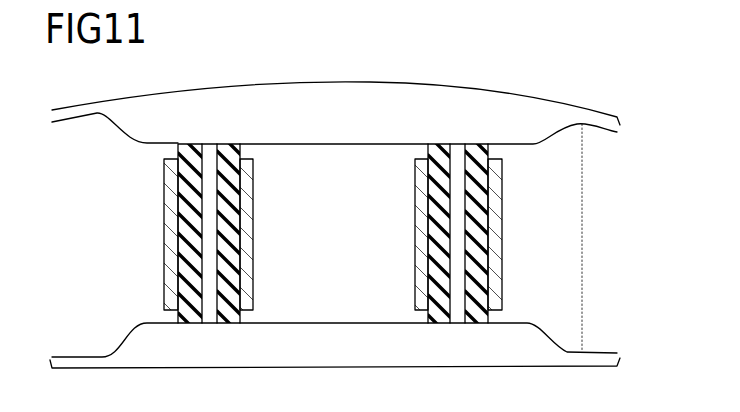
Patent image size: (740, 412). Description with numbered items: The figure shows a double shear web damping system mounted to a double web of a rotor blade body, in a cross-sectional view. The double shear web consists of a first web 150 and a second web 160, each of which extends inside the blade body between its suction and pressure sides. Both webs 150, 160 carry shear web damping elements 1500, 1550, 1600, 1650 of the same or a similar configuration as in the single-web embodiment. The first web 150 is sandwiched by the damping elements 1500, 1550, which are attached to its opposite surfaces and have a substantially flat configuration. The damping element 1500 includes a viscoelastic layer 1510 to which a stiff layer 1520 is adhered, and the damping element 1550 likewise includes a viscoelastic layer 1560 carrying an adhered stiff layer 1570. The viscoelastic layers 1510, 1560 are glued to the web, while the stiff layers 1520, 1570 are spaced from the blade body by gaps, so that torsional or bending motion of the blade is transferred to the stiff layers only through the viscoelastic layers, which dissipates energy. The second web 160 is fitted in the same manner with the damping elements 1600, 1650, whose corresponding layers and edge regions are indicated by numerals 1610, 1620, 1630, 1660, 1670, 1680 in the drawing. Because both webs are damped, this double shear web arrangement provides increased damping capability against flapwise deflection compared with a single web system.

The first web 150 is at (208, 158).
The second web 160 is at (460, 158).
The shear web damping element 1500 is at (147, 221).
The viscoelastic layer 1510 is at (178, 193).
The stiff layer 1520 is at (172, 281).
The shear web damping element 1550 is at (270, 211).
The viscoelastic layer 1560 is at (230, 158).
The stiff layer 1570 is at (252, 236).
The shear web damping element 1600 is at (523, 231).
The third plate 1610 is at (503, 266).
The third plate hatching region 1620 is at (503, 198).
The plate end corner 1630 is at (502, 154).
The shear web damping element 1650 is at (403, 264).
The fourth support block 1660 is at (436, 158).
The fourth plate hatching region 1670 is at (414, 203).
The plate end corner 1680 is at (414, 154).